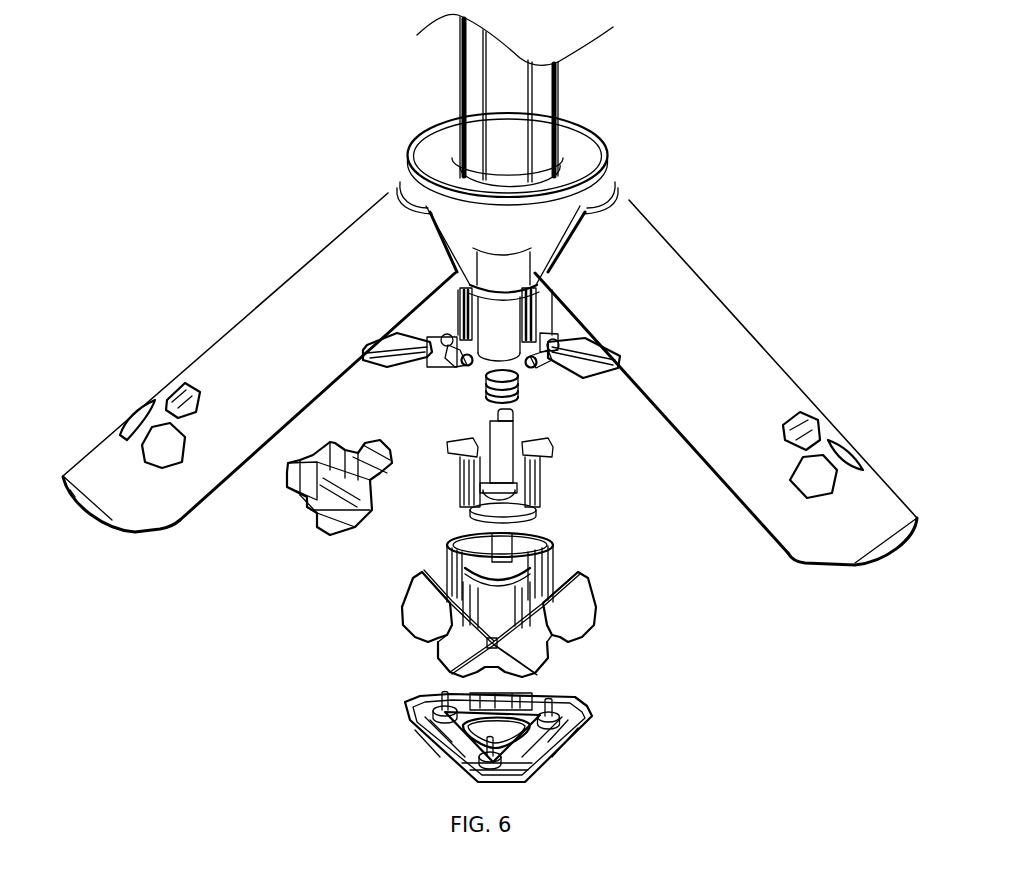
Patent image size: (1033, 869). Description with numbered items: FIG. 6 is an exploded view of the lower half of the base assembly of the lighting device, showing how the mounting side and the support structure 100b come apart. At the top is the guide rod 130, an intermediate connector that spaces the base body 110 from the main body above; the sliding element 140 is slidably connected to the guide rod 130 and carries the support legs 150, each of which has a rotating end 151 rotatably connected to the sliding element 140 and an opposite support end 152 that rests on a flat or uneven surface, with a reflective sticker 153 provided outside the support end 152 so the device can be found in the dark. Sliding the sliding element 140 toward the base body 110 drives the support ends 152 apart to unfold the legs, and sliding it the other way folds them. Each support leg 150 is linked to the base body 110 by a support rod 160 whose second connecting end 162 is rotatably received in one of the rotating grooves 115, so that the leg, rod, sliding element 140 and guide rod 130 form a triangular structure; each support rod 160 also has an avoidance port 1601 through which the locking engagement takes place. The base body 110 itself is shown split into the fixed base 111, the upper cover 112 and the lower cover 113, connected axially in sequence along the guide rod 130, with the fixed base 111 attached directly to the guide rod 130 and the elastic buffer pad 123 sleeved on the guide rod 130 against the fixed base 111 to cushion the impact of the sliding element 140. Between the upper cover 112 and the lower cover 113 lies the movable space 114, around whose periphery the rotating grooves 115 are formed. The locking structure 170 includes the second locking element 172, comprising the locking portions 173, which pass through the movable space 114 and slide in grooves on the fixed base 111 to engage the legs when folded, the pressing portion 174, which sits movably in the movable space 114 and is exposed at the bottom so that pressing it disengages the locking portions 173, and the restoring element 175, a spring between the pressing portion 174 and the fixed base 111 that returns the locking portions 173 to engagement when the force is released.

The support structure 100b is at (305, 234).
The base body 110 is at (606, 662).
The fixed base 111 is at (460, 302).
The upper cover 112 is at (592, 620).
The lower cover 113 is at (588, 720).
The movable space 114 is at (538, 553).
The rotating grooves 115 is at (513, 695).
The buffer pad 123 is at (497, 297).
The guide rod 130 is at (560, 78).
The sliding element 140 is at (430, 144).
The support legs 150 is at (267, 303).
The rotating end 151 is at (400, 200).
The support end 152 is at (83, 465).
The reflective sticker 153 is at (138, 418).
The support rods 160 is at (383, 365).
The avoidance port 1601 is at (407, 357).
The second connecting end 162 is at (468, 366).
The locking structure 170 is at (452, 493).
The second locking element 172 is at (549, 446).
The locking portions 173 is at (543, 457).
The pressing portion 174 is at (523, 517).
The restoring element 175 is at (513, 400).